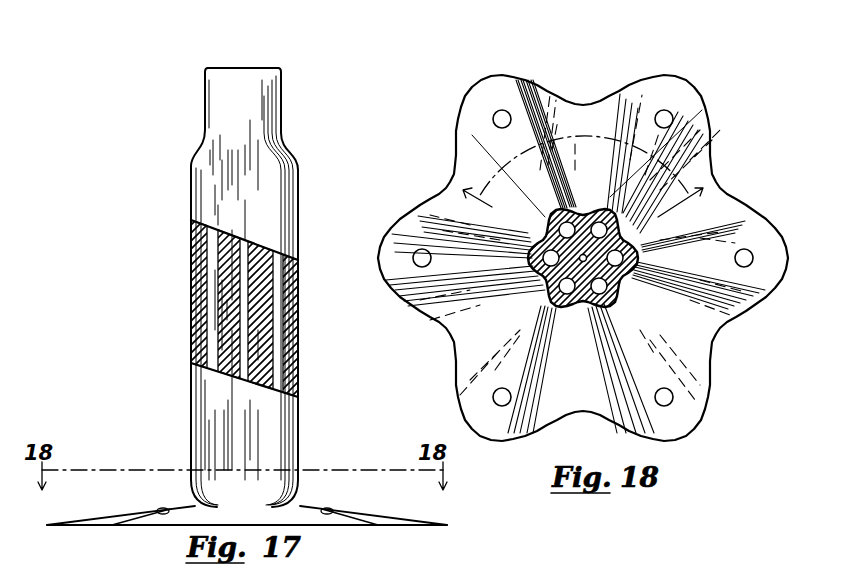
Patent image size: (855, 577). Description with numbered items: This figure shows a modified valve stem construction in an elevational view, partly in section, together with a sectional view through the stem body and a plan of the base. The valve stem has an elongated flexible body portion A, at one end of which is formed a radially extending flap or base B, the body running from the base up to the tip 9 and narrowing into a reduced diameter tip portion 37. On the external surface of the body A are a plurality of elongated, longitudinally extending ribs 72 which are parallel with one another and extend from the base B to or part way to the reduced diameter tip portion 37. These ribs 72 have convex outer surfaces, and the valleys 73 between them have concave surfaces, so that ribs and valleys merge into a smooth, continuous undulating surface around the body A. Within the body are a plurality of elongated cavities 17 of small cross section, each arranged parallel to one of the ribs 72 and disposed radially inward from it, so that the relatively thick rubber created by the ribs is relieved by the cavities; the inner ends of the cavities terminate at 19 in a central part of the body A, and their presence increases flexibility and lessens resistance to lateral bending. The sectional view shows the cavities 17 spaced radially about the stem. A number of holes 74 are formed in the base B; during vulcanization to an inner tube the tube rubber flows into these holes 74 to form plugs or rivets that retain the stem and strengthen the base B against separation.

In FIG. 17, the tip 9 is at (209, 70).
In FIG. 17, the reduced diameter tip portion 37 is at (286, 108).
In FIG. 17, the elongated flexible body portion A is at (299, 318).
In FIG. 17, the ribs 72 is at (205, 398).
In FIG. 18, the ribs 72 is at (548, 308).
In FIG. 17, the valleys 73 is at (220, 443).
In FIG. 18, the valleys 73 is at (543, 285).
In FIG. 17, the base B is at (122, 509).
In FIG. 18, the base B is at (584, 103).
In FIG. 17, the holes 74 is at (163, 508).
In FIG. 18, the holes 74 is at (745, 249).
In FIG. 18, the elongated cavities 17 is at (598, 208).
In FIG. 18, the inner ends of the cavities 19 is at (583, 184).